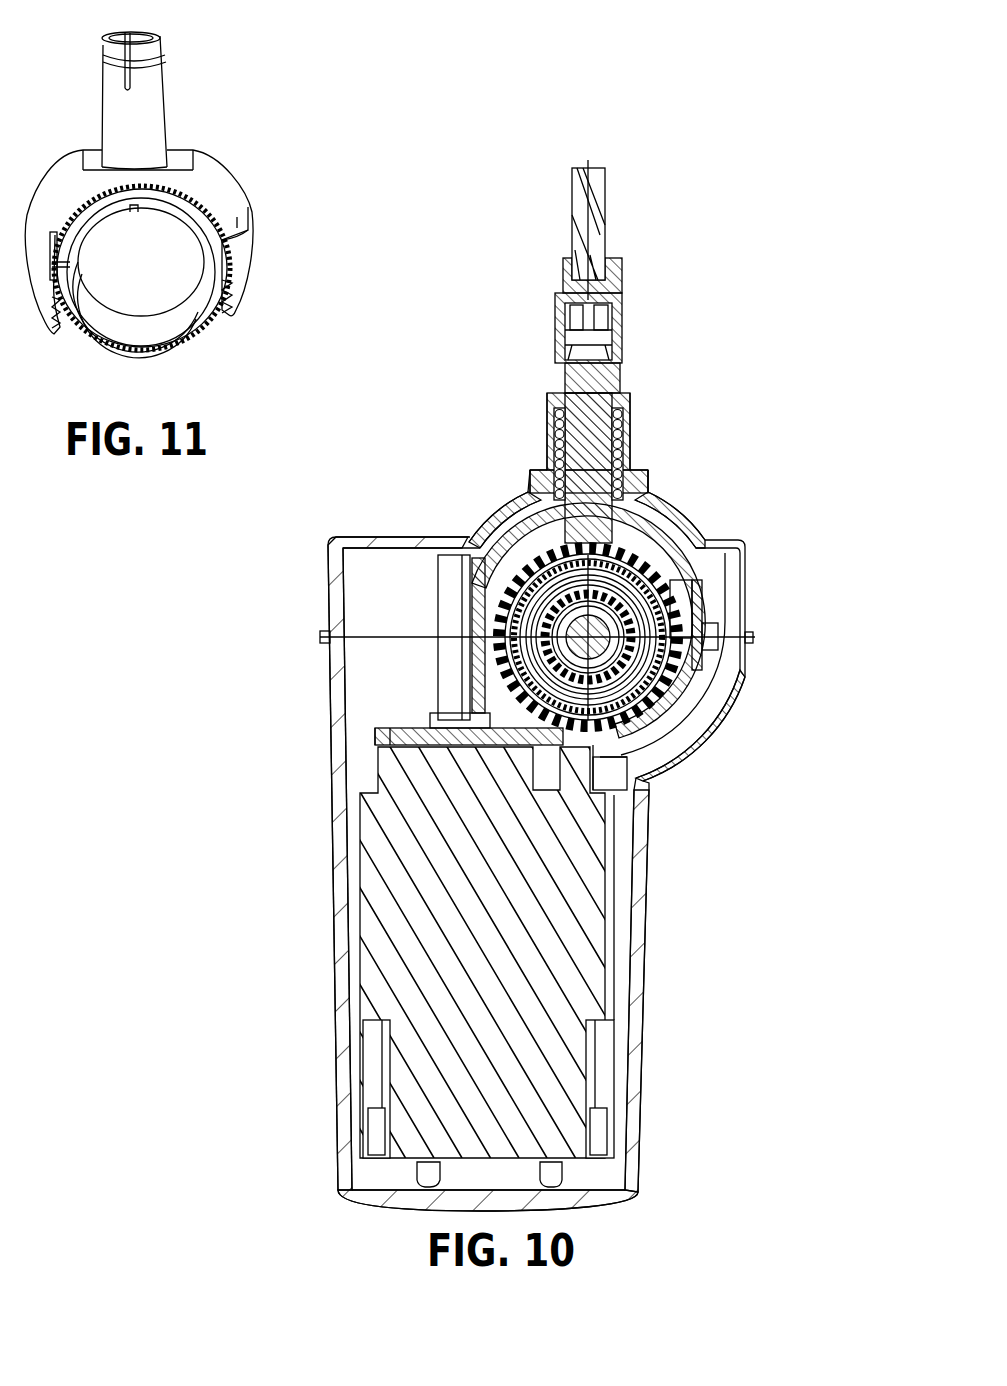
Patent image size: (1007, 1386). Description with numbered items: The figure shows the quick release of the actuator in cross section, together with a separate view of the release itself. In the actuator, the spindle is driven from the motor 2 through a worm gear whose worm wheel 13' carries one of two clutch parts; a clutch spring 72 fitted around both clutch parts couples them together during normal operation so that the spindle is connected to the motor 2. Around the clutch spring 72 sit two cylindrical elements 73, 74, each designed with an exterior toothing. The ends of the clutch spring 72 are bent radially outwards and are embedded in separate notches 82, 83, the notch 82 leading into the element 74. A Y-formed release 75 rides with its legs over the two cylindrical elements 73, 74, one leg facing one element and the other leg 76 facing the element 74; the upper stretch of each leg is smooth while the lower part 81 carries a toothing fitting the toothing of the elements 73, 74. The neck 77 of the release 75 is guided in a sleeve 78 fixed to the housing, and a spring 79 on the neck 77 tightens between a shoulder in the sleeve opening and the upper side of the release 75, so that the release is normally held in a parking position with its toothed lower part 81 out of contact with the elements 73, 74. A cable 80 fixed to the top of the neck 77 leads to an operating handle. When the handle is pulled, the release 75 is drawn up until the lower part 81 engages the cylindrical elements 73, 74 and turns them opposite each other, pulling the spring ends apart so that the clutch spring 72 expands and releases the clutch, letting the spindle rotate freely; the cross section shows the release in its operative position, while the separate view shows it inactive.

In FIG. 10, the motor 2 is at (590, 922).
In FIG. 10, the worm wheel 13' is at (610, 642).
In FIG. 10, the clutch spring 72 is at (560, 575).
In FIG. 11, the cylindrical element 73 is at (122, 327).
In FIG. 10, the cylindrical element 74 is at (637, 683).
In FIG. 11, the cylindrical element 74 is at (117, 297).
In FIG. 10, the Y-formed release 75 is at (593, 525).
In FIG. 11, the Y-formed release 75 is at (187, 145).
In FIG. 10, the leg 76 is at (677, 588).
In FIG. 11, the leg 76 is at (237, 220).
In FIG. 10, the neck 77 is at (587, 386).
In FIG. 11, the neck 77 is at (152, 108).
In FIG. 10, the sleeve 78 is at (630, 406).
In FIG. 10, the spring 79 is at (627, 455).
In FIG. 10, the cable 80 is at (597, 200).
In FIG. 10, the lower part of the legs 81 is at (672, 645).
In FIG. 11, the lower part of the legs 81 is at (233, 293).
In FIG. 11, the notch 82 is at (135, 210).
In FIG. 11, the notch 83 is at (55, 268).